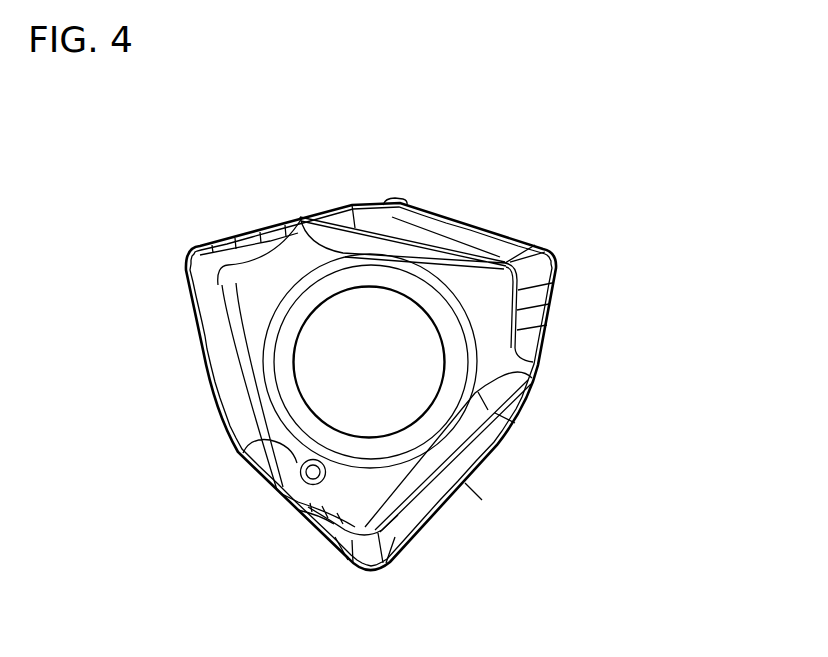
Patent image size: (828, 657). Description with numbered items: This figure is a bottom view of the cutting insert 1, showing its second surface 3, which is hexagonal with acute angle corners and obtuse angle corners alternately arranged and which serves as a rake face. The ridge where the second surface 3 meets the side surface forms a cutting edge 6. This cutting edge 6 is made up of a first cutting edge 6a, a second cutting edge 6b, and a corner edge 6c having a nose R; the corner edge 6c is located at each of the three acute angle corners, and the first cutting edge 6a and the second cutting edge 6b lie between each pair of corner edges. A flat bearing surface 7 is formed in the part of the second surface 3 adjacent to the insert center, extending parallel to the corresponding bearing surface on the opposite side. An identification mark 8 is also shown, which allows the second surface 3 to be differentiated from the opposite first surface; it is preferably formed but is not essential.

The cutting insert 1 is at (512, 195).
The second surface 3 is at (468, 296).
The cutting edge 6 is at (468, 490).
The first cutting edge 6a is at (448, 508).
The second cutting edge 6b is at (312, 535).
The corner edge 6c is at (186, 258).
The bearing surface 7 is at (492, 340).
The identification mark 8 is at (298, 436).